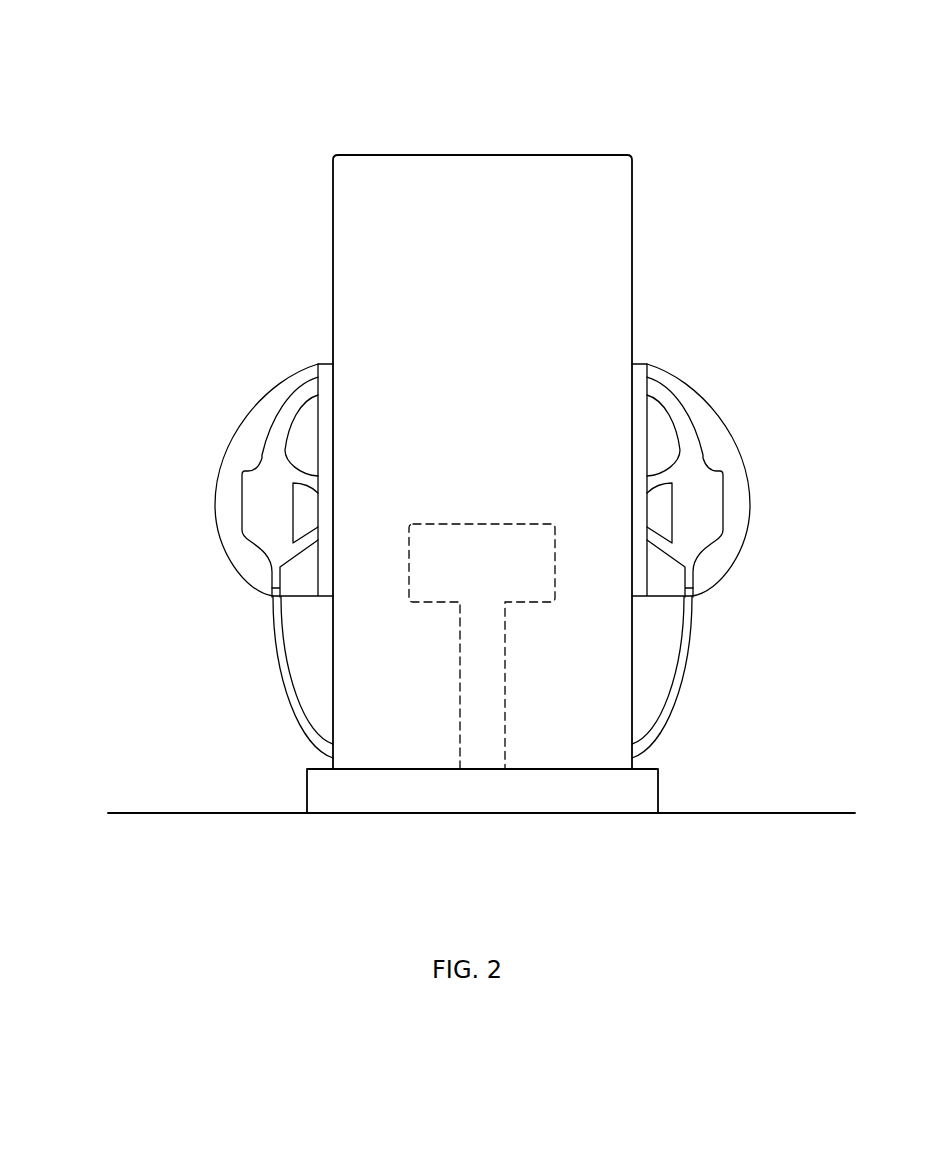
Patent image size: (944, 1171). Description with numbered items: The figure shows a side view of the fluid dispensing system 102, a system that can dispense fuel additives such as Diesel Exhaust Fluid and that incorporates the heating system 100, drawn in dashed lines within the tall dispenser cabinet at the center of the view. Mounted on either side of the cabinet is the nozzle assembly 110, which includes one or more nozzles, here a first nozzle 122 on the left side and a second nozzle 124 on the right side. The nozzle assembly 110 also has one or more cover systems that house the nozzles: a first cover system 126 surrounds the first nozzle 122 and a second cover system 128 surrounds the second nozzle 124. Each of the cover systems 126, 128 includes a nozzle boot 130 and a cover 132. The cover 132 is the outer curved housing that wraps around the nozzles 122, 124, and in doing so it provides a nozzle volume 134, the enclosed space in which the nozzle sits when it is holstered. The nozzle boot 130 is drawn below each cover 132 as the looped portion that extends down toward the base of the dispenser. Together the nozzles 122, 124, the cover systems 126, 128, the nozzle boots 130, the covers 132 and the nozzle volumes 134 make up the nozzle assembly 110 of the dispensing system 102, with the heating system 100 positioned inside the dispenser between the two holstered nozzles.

The heating system 100 is at (480, 522).
The fluid dispensing system 102 is at (247, 117).
The nozzle assembly 110 is at (98, 372).
The first nozzle 122 is at (253, 535).
The second nozzle 124 is at (712, 535).
The first cover system 126 is at (200, 485).
The second cover system 128 is at (765, 485).
The nozzle boot 130 is at (303, 588).
The cover 132 is at (278, 385).
The nozzle volume 134 is at (255, 440).